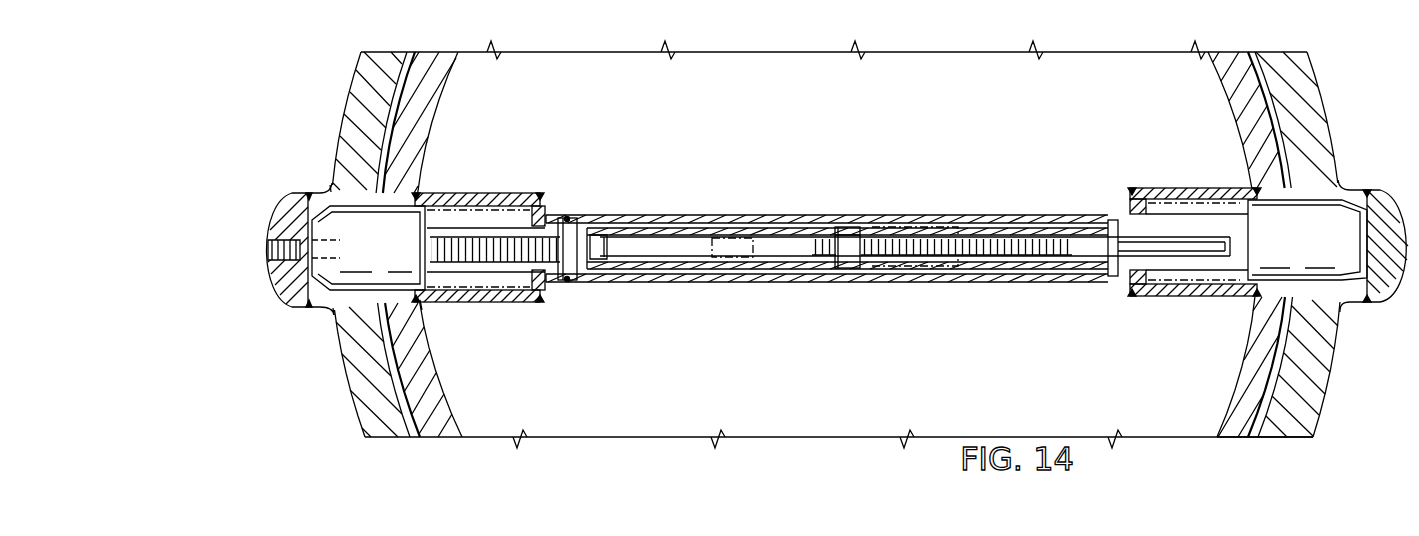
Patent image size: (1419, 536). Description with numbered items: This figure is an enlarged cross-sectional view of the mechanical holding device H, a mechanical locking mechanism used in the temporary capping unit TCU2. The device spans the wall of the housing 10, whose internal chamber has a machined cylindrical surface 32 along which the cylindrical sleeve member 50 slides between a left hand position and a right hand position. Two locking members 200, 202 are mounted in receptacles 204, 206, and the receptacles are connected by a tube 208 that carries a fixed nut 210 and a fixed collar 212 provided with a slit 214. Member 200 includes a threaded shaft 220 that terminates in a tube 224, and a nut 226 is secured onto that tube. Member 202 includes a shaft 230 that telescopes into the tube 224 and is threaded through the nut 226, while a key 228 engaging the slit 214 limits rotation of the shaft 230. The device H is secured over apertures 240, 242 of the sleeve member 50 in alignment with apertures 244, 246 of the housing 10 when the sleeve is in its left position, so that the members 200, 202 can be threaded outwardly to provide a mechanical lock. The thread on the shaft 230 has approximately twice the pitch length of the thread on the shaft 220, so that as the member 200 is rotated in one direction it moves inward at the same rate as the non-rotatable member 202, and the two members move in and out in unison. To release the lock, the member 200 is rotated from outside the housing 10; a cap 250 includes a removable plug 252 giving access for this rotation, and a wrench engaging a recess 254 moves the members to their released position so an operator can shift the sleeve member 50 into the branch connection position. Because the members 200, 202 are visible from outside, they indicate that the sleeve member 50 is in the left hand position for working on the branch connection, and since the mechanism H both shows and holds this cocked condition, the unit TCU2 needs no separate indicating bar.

The housing 10 is at (353, 94).
The machined cylindrical surface 32 is at (1330, 385).
The cylindrical sleeve member 50 is at (428, 108).
The locking member 200 is at (504, 193).
The locking member 202 is at (1179, 188).
The receptacle 204 is at (457, 193).
The receptacle 206 is at (1203, 188).
The tube 208 is at (687, 214).
The fixed nut 210 is at (589, 214).
The fixed collar 212 is at (1109, 268).
The slit 214 is at (1146, 300).
The threaded shaft 220 is at (503, 265).
The tube 224 is at (771, 227).
The nut 226 is at (845, 226).
The key 228 is at (1183, 299).
The shaft 230 is at (1075, 240).
The aperture 240 is at (1343, 320).
The aperture 242 is at (426, 334).
The aperture 244 is at (1353, 301).
The aperture 246 is at (331, 312).
The cap 250 is at (283, 194).
The removable plug 252 is at (270, 248).
The recess 254 is at (343, 251).
The mechanical holding device H is at (879, 187).
The temporary capping unit TCU2 is at (1327, 403).